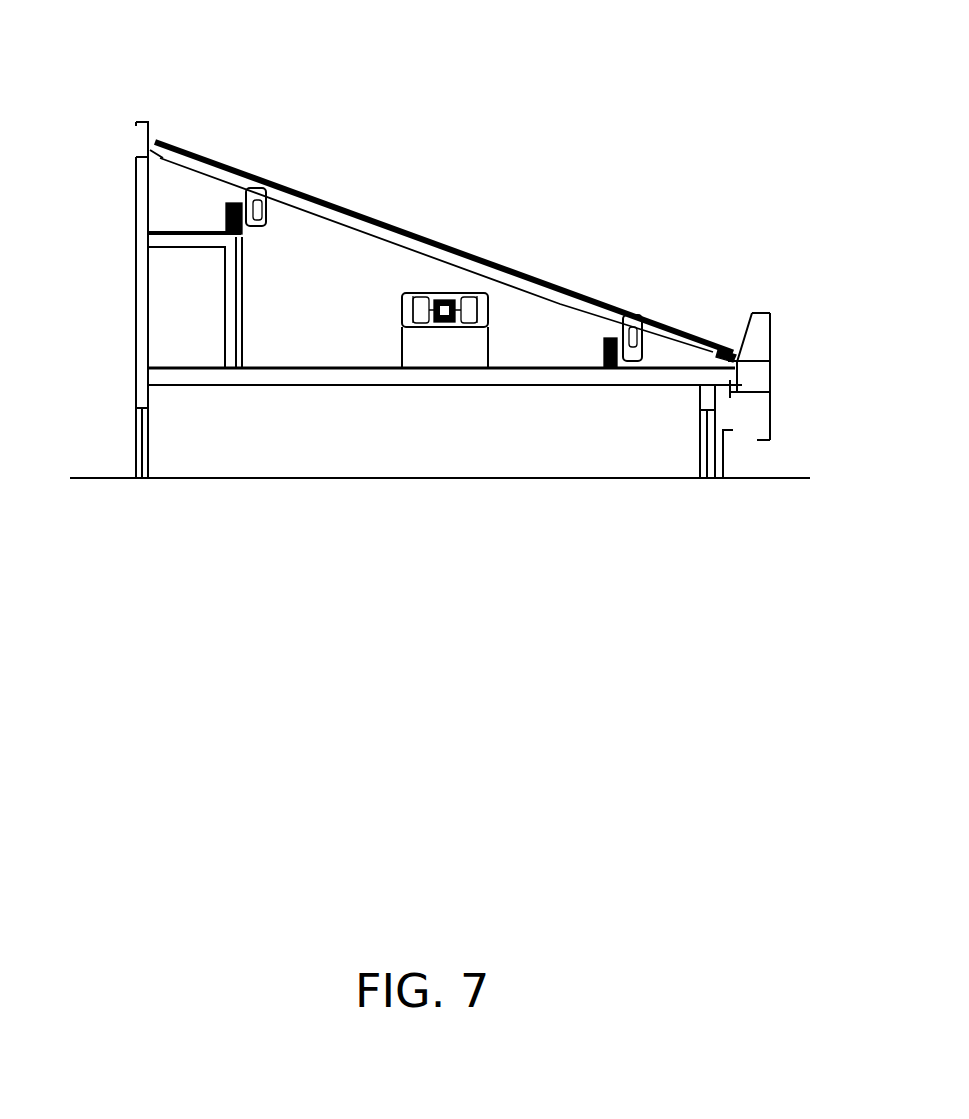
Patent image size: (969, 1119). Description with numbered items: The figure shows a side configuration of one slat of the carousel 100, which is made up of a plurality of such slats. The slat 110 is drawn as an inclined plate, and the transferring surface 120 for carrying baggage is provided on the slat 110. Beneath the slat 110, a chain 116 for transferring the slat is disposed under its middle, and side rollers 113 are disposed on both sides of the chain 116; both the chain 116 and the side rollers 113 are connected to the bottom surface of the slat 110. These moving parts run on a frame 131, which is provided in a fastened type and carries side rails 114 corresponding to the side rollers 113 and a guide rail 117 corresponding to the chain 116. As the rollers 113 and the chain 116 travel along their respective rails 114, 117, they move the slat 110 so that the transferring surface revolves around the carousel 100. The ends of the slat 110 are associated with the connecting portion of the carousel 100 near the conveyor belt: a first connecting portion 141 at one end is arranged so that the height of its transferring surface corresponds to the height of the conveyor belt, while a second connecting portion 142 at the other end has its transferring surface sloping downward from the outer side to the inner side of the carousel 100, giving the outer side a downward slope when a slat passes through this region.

The carousel 100 is at (483, 32).
The slat 110 is at (333, 208).
The side rollers 113 is at (258, 190).
The side rails 114 is at (235, 203).
The chain 116 is at (440, 292).
The guide rail 117 is at (468, 290).
The transferring surface 120 is at (533, 278).
The frame 131 is at (773, 335).
The first connecting portion 141 is at (162, 142).
The second connecting portion 142 is at (727, 342).